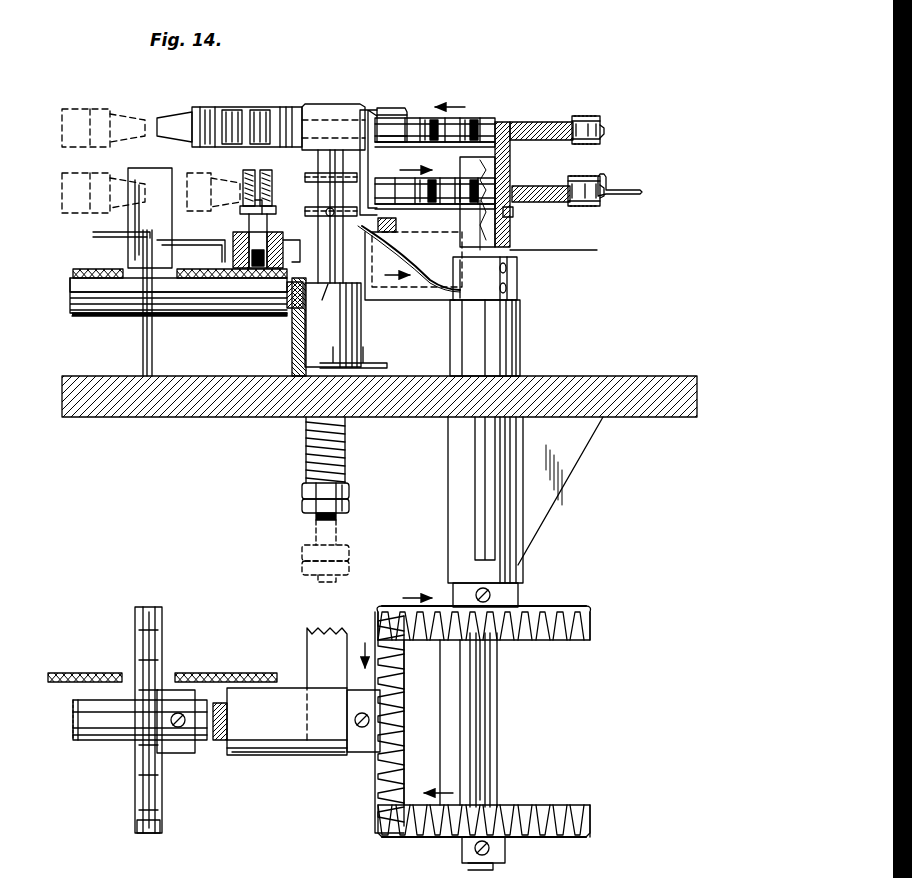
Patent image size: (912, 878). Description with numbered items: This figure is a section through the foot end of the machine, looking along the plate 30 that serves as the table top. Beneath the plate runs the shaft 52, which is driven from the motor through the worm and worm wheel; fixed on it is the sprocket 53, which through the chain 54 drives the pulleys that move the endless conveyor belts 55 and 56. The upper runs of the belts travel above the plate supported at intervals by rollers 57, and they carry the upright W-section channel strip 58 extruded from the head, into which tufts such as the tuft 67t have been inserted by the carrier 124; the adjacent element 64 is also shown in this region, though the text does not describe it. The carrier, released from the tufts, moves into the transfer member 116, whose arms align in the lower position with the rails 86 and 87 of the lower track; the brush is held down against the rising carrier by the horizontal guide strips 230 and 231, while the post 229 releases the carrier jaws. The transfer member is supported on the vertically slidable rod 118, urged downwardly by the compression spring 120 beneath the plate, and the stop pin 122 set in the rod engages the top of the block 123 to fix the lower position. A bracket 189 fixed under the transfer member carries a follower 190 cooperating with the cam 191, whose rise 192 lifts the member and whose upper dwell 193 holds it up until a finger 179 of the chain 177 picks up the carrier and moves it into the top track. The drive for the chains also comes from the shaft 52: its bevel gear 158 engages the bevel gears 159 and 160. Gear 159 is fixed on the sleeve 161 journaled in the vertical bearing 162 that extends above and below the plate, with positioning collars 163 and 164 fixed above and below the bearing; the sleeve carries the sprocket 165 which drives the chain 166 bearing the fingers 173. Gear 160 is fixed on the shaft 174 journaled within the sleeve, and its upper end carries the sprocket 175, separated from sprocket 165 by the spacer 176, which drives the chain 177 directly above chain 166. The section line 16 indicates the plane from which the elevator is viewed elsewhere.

The section line 16 is at (322, 76).
The plate 30 is at (538, 376).
The shaft 52 is at (118, 740).
The sprocket 53 is at (150, 775).
The chain 54 is at (162, 826).
The conveyor belt 55 is at (210, 269).
The conveyor belt 56 is at (93, 269).
The rollers 57 is at (205, 316).
The channel strip 58 is at (255, 270).
The spring seat 64 is at (272, 200).
The tuft 67t is at (242, 200).
The rail 86 is at (285, 205).
The rail 87 is at (262, 176).
The transfer member 116 is at (322, 108).
The rod 118 is at (346, 325).
The compression spring 120 is at (300, 460).
The stop pin 122 is at (333, 218).
The block 123 is at (355, 322).
The carrier 124 is at (228, 106).
The bevel gear 158 is at (402, 712).
The bevel gear 159 is at (592, 616).
The bevel gear 160 is at (584, 822).
The sleeve 161 is at (572, 248).
The vertical bearing 162 is at (523, 328).
The positioning collar 163 is at (520, 275).
The positioning collar 164 is at (520, 594).
The sprocket 165 is at (522, 188).
The chain 166 is at (407, 208).
The fingers 173 is at (622, 186).
The shaft 174 is at (520, 231).
The sprocket 175 is at (520, 124).
The spacer 176 is at (510, 168).
The chain 177 is at (580, 118).
The fingers 179 is at (400, 88).
The bracket 189 is at (368, 176).
The follower 190 is at (376, 210).
The cam 191 is at (430, 302).
The rise 192 is at (412, 262).
The dwell 193 is at (400, 242).
The post 229 is at (170, 154).
The guide strip 230 is at (270, 236).
The guide strip 231 is at (237, 236).